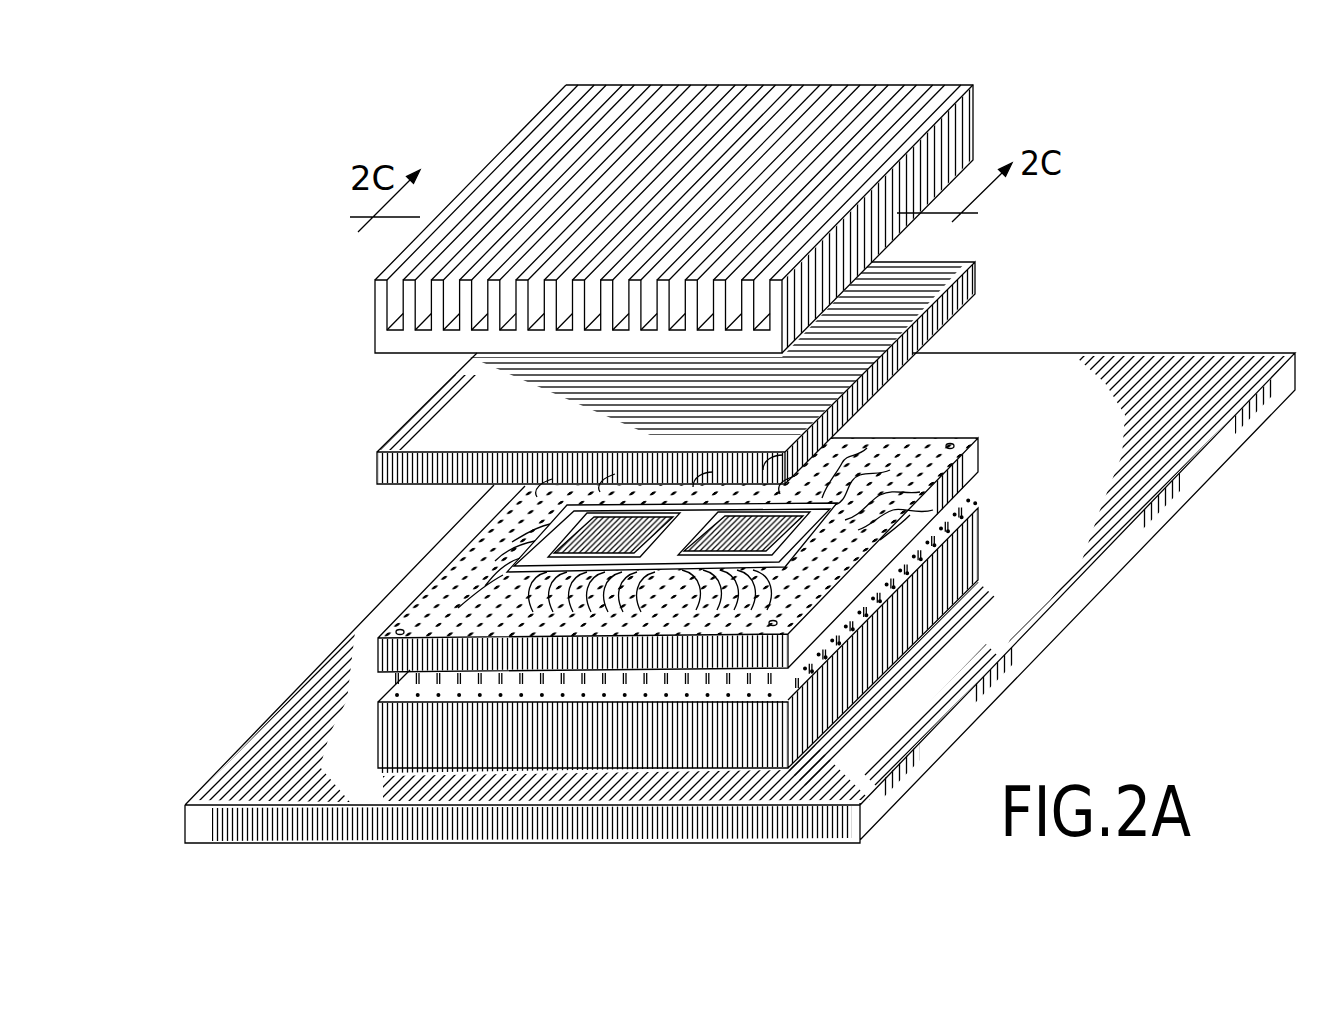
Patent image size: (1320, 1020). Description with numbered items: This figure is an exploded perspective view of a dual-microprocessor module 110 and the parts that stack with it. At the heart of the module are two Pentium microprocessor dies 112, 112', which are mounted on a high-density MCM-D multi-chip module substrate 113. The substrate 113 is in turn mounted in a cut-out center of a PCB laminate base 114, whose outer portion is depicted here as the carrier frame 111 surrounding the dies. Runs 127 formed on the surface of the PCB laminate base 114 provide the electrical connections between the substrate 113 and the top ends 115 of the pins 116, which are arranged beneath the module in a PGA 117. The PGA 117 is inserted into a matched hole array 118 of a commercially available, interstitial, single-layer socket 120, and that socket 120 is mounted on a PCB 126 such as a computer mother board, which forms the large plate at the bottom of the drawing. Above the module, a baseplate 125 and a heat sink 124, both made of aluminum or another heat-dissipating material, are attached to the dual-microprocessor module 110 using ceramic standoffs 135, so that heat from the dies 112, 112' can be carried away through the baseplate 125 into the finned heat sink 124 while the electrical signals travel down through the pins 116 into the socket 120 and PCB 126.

The dual-microprocessor module 110 is at (992, 440).
The chip carrier frame 111 is at (530, 553).
The microprocessor die 112 is at (744, 476).
The microprocessor die 112' is at (613, 475).
The MCM-D substrate 113 is at (580, 517).
The PCB laminate base 114 is at (403, 627).
The top ends of pins 115 is at (455, 580).
The pins 116 is at (392, 680).
The PGA 117 is at (957, 428).
The matched hole array 118 is at (392, 698).
The socket 120 is at (970, 556).
The heat sink 124 is at (968, 128).
The baseplate 125 is at (977, 274).
The PCB 126 is at (267, 755).
The runs 127 is at (870, 455).
The ceramic standoffs 135 is at (778, 623).